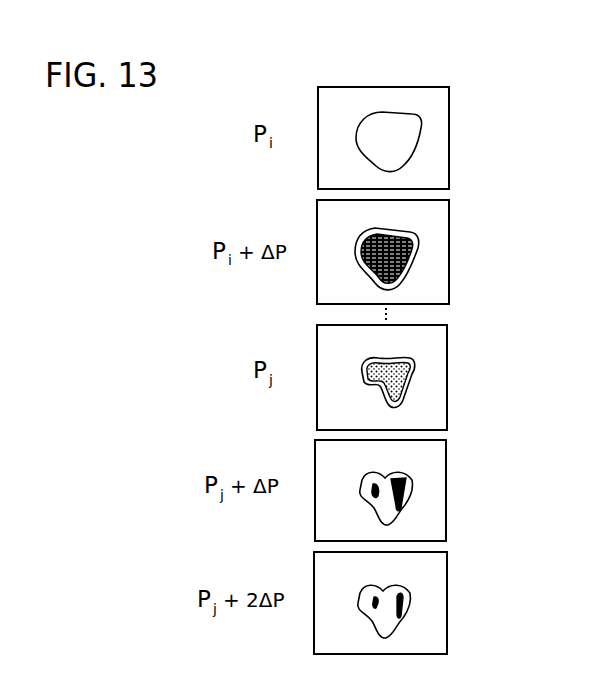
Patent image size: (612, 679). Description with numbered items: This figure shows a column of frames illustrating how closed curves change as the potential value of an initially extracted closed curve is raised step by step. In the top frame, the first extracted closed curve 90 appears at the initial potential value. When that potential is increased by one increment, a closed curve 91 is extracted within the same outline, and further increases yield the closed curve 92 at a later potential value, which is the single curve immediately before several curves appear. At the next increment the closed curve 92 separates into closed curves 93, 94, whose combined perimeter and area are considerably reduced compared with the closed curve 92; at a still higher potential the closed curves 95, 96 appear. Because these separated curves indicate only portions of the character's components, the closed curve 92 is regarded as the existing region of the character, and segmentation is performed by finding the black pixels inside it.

The first extracted closed curve 90 is at (420, 240).
The shrinking tissue region at increased pressure 91 is at (407, 270).
The closed curve at potential value Pj 92 is at (404, 393).
The closed curve 93 is at (373, 498).
The closed curve 94 is at (403, 498).
The closed curve 95 is at (372, 603).
The closed curve 96 is at (400, 608).